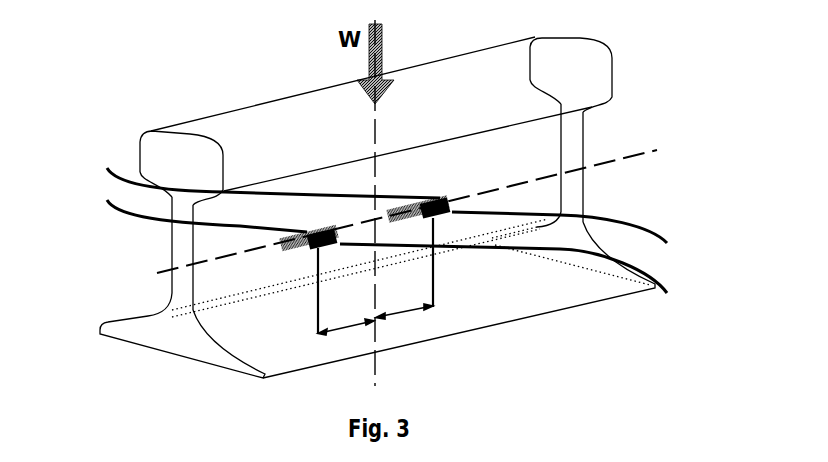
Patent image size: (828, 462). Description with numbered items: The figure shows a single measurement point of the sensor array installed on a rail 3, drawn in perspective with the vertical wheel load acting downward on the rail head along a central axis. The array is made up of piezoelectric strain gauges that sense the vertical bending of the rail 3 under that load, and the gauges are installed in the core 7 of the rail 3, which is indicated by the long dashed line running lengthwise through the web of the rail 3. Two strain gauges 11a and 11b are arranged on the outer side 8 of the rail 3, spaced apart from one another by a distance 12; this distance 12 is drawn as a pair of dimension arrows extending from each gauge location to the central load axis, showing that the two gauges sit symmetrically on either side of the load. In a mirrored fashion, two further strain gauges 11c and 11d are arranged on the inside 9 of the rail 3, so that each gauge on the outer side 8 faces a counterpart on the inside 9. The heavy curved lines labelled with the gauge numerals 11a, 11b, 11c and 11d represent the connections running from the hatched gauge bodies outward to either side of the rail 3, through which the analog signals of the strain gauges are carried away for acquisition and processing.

The rail 3 is at (233, 123).
The core 7 is at (597, 167).
The outer side 8 is at (582, 143).
The inside 9 is at (172, 288).
The strain gauge 11a is at (491, 277).
The strain gauge 11b is at (546, 238).
The strain gauge 11c is at (179, 209).
The strain gauge 11d is at (245, 174).
The distance 12 is at (375, 289).